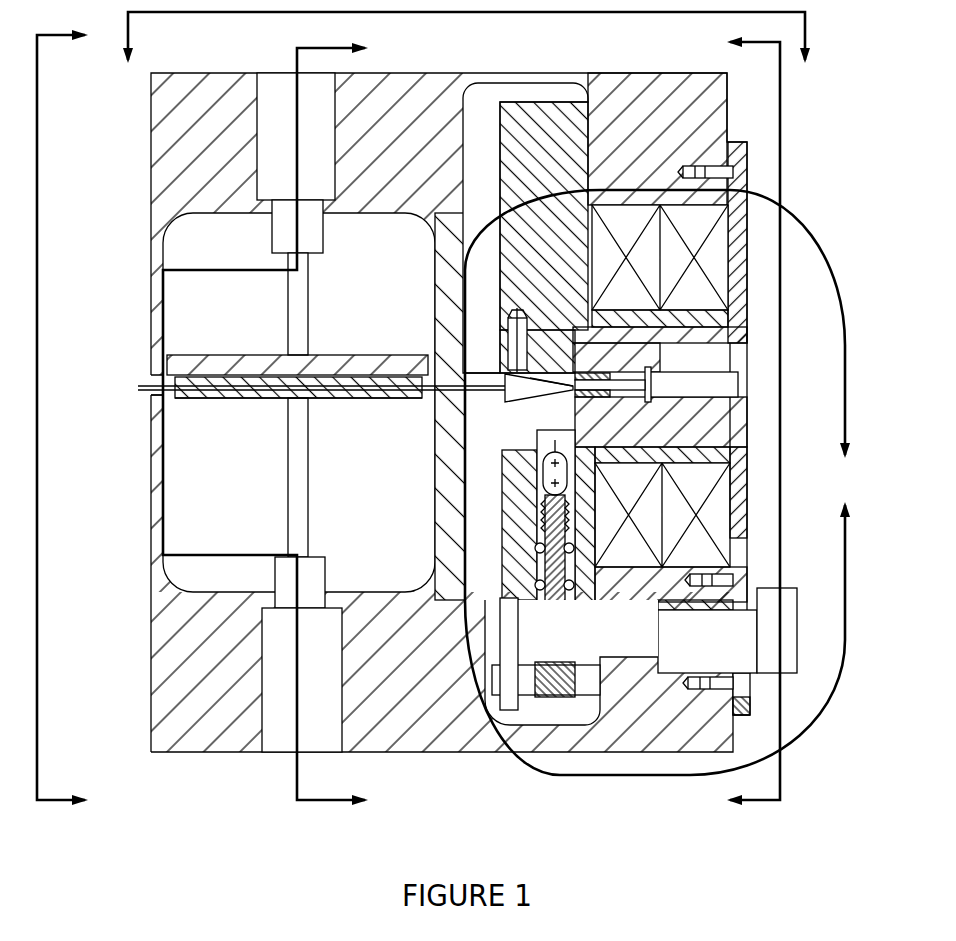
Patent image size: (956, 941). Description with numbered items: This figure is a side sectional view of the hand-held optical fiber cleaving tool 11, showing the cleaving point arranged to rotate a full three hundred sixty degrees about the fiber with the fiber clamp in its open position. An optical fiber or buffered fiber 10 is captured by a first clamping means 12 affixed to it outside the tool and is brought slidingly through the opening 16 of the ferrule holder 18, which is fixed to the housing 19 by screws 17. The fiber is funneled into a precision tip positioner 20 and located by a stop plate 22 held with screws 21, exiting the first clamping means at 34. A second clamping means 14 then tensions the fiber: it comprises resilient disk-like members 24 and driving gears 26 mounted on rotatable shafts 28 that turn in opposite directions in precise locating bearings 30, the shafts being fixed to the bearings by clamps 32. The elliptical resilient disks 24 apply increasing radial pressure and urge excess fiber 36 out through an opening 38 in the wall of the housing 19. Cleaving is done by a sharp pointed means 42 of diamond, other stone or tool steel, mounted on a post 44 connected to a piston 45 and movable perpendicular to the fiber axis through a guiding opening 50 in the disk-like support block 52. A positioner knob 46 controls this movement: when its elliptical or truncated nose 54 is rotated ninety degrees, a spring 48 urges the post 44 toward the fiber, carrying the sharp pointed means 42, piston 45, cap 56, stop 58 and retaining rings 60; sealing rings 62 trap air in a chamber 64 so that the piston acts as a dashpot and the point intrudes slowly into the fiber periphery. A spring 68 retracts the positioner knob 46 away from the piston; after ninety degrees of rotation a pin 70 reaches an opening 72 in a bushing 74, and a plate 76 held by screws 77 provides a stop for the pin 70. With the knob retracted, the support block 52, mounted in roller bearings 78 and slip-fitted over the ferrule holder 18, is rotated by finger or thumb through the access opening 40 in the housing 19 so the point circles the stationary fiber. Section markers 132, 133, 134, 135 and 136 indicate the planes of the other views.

The optical fiber 10 is at (512, 386).
The cleaving tool 11 is at (515, 752).
The first clamping means 12 is at (733, 383).
The second clamping means 14 is at (205, 399).
The opening 16 is at (752, 405).
The screws 17 is at (733, 172).
The ferrule holder 18 is at (738, 252).
The housing 19 is at (713, 85).
The precision tip positioner 20 is at (580, 373).
The screws 21 is at (510, 374).
The stop plate 22 is at (515, 355).
The resilient disk-like members 24 is at (255, 396).
The driving gears 26 is at (197, 362).
The rotatable shafts 28 is at (290, 318).
The bearings 30 is at (270, 150).
The clamps 32 is at (282, 240).
The fiber exit 34 is at (548, 387).
The excess fiber 36 is at (152, 385).
The opening 38 is at (152, 399).
The access opening 40 is at (535, 73).
The sharp pointed means 42 is at (566, 391).
The post 44 is at (556, 425).
The piston 45 is at (540, 581).
The positioner knob 46 is at (790, 625).
The spring 48 is at (545, 508).
The guiding opening 50 is at (547, 535).
The support block 52 is at (548, 104).
The nose 54 is at (470, 601).
The cap 56 is at (540, 700).
The stop 58 is at (496, 622).
The retaining rings 60 is at (520, 556).
The sealing rings 62 is at (572, 540).
The chamber 64 is at (570, 556).
The spring 68 is at (628, 655).
The pin 70 is at (665, 652).
The opening 72 is at (720, 655).
The bushing 74 is at (733, 598).
The plate 76 is at (738, 716).
The screws 77 is at (742, 572).
The roller bearings 78 is at (650, 265).
The section line 132 is at (467, 51).
The section line 133 is at (655, 421).
The section line 134 is at (81, 417).
The section line 135 is at (288, 421).
The section line 136 is at (869, 492).